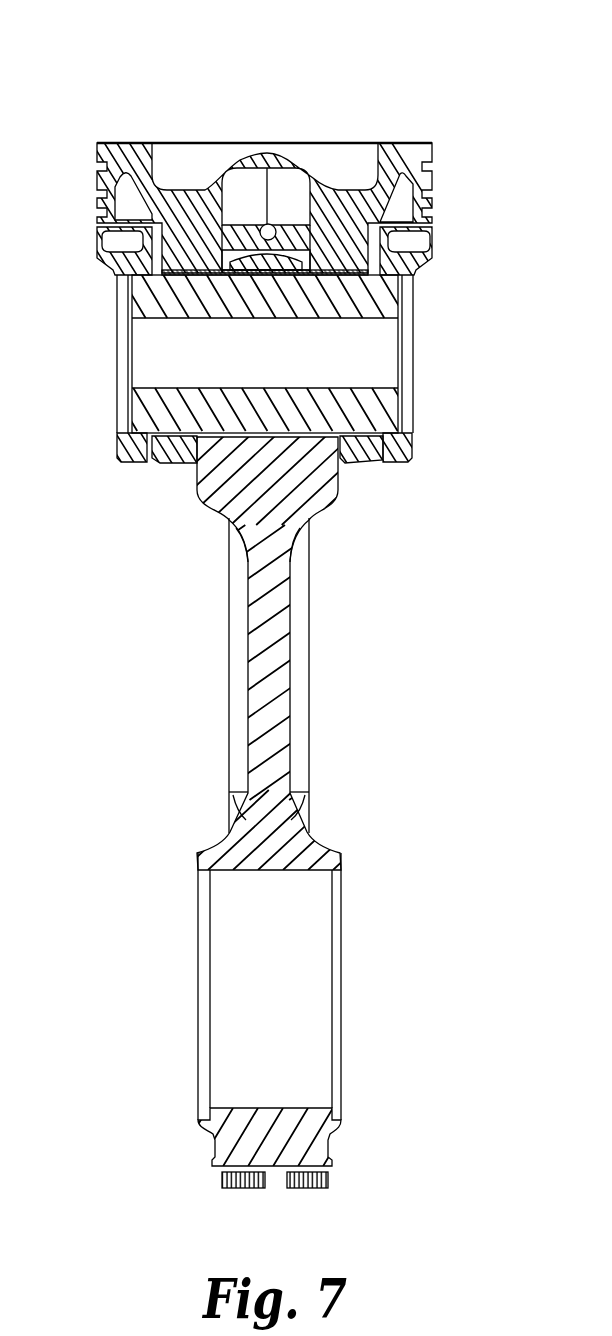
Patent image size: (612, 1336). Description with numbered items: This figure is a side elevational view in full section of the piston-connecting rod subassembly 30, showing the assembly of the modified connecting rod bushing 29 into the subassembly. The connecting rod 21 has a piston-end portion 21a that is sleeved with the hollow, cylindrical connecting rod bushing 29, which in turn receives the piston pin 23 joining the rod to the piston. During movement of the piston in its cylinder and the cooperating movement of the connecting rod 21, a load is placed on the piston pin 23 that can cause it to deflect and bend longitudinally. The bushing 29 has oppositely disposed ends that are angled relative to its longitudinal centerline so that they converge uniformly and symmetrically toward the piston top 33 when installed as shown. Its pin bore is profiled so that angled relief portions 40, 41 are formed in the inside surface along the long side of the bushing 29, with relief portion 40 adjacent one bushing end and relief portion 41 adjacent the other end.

The piston-connecting rod subassembly 30 is at (481, 120).
The piston top 33 is at (127, 141).
The piston-end portion 21a is at (283, 165).
The piston pin 23 is at (152, 406).
The relief portion 40 is at (182, 443).
The relief portion 41 is at (336, 422).
The connecting rod bushing 29 is at (263, 437).
The connecting rod 21 is at (297, 683).